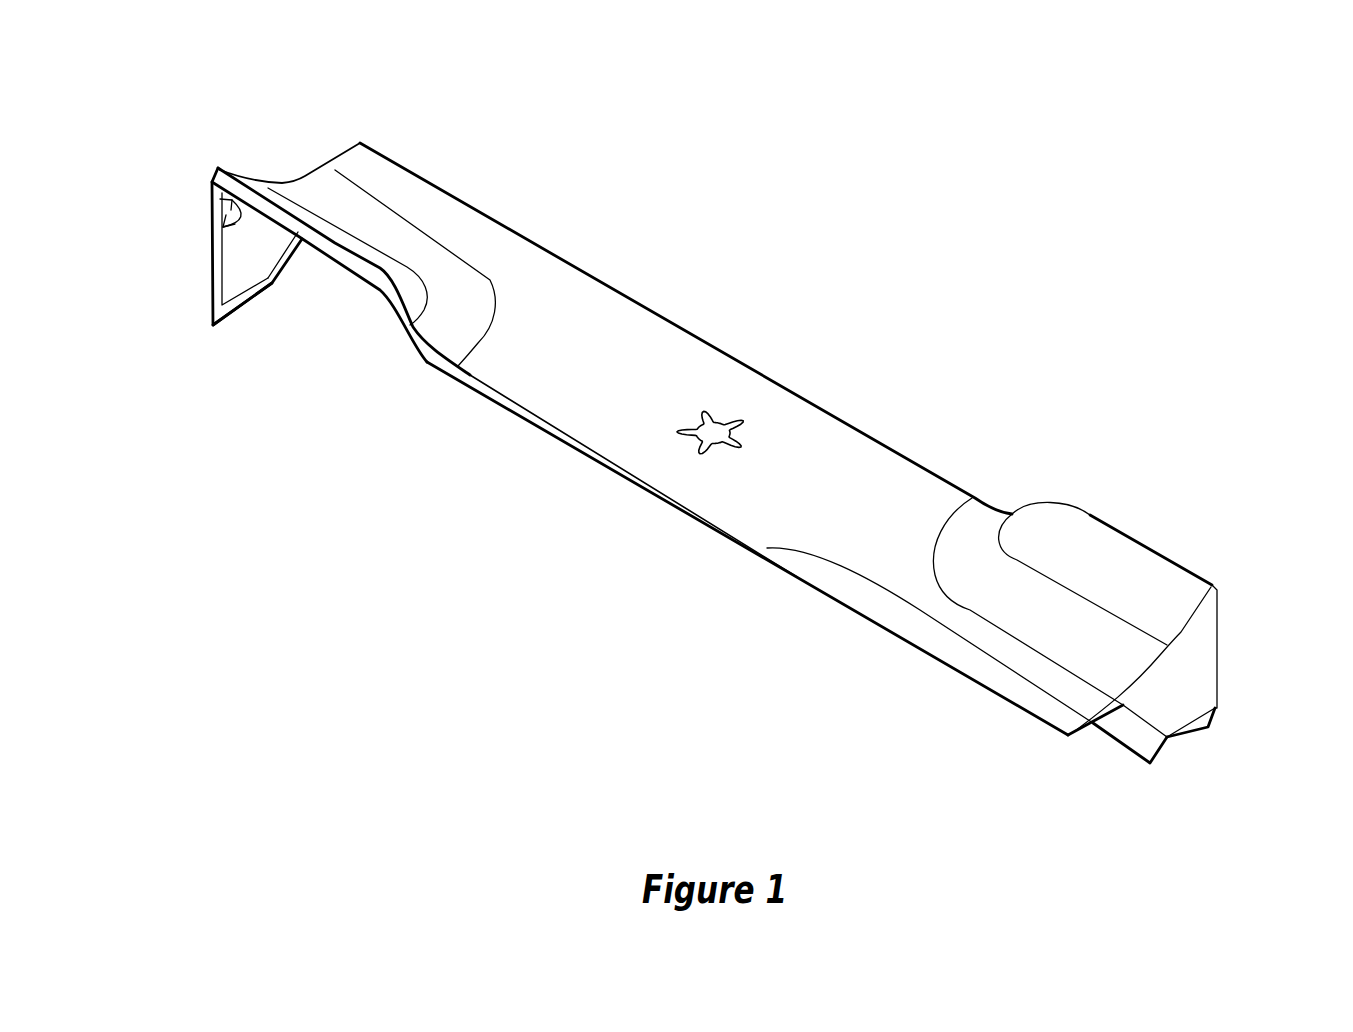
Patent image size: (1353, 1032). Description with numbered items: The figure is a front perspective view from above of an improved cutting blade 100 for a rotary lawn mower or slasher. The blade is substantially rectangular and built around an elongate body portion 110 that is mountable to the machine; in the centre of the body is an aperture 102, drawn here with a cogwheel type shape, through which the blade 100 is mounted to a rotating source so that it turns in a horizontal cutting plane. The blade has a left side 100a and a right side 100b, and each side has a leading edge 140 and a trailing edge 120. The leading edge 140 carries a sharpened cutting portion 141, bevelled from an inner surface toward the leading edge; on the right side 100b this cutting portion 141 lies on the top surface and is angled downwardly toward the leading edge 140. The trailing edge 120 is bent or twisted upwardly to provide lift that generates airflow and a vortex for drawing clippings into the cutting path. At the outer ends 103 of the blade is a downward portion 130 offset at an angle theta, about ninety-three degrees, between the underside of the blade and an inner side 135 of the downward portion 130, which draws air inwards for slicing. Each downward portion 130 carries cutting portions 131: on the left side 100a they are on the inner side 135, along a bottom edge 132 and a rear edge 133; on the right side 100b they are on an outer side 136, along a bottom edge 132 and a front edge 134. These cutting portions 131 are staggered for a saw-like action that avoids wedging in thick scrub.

The cutting blade 100 is at (632, 564).
The left side 100a is at (590, 352).
The right side 100b is at (905, 528).
The aperture 102 is at (716, 424).
The outer ends 103 is at (296, 178).
The body portion 110 is at (808, 455).
The trailing edge 120 is at (317, 235).
The downward portion 130 is at (243, 275).
The cutting portion 131 is at (278, 275).
The bottom edge 132 is at (225, 325).
The rear edge 133 is at (286, 273).
The front edge 134 is at (1105, 738).
The inner side 135 is at (226, 205).
The outer side 136 is at (1183, 691).
The leading edge 140 is at (470, 205).
The cutting portion 141 is at (896, 624).